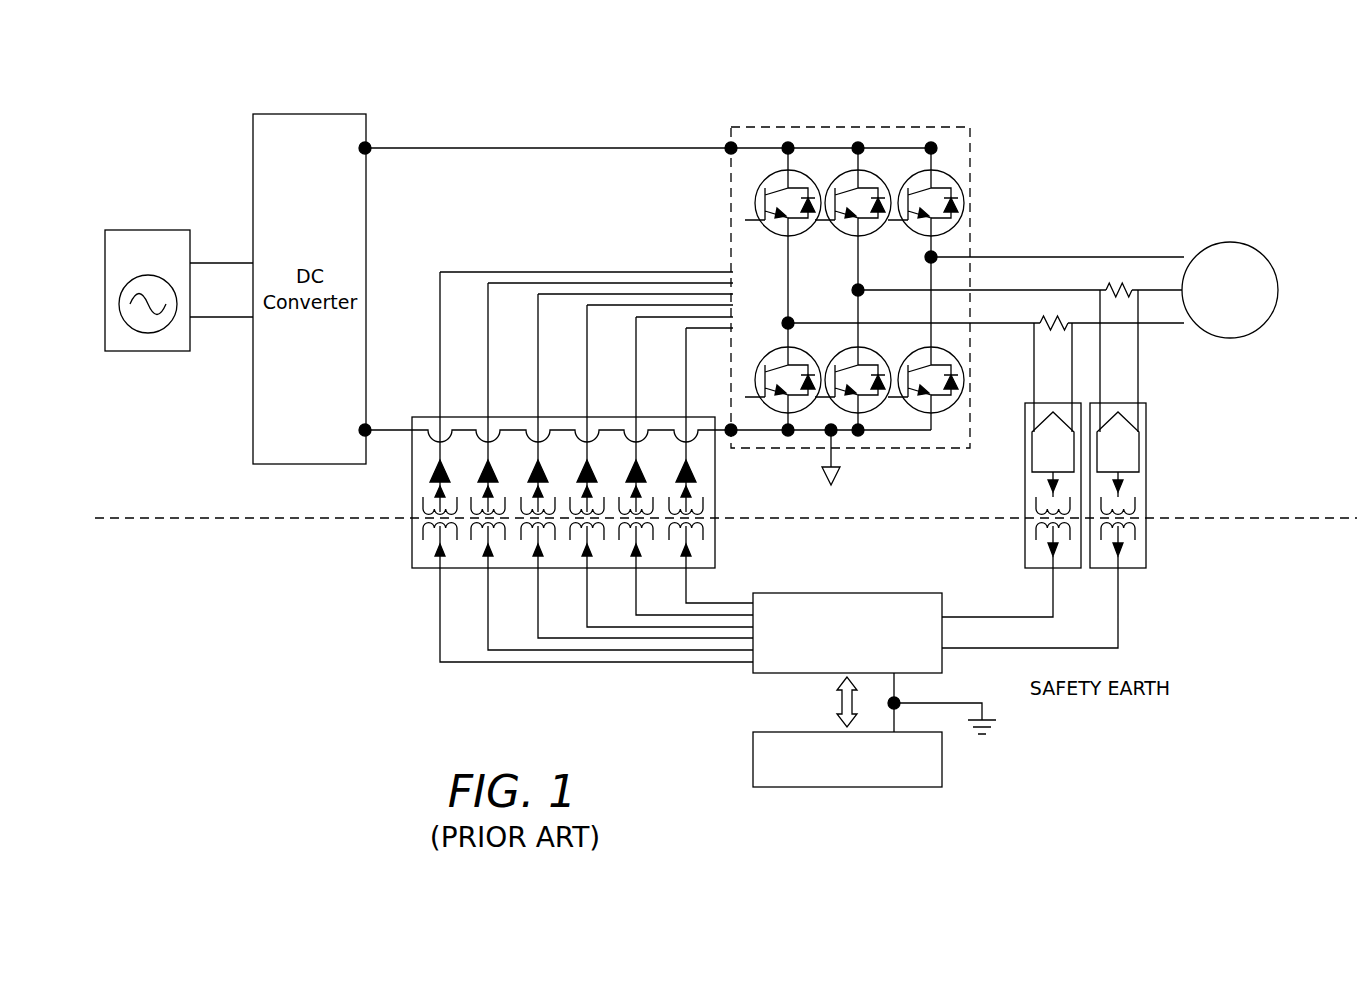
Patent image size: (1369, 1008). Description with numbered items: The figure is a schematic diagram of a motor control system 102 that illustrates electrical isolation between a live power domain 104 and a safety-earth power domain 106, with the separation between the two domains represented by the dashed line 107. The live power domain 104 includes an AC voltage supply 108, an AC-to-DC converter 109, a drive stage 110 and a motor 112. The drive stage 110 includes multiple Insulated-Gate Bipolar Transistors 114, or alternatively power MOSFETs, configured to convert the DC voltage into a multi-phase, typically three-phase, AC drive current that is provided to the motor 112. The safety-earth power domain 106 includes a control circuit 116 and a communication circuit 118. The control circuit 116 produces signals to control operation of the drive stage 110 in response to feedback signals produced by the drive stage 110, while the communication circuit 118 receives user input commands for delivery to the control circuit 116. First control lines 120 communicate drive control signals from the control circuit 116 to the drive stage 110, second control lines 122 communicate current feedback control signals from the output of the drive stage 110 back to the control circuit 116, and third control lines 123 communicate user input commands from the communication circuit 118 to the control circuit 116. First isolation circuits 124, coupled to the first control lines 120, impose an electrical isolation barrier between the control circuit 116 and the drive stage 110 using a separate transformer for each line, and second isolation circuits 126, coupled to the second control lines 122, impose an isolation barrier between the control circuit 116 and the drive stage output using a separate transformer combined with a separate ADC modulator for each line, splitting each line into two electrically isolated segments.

The motor control system 102 is at (1218, 48).
The live power domain 104 is at (1312, 185).
The safety-earth power domain 106 is at (1302, 635).
The dashed line 107 is at (1258, 518).
The AC voltage supply 108 is at (153, 229).
The AC-to-DC converter 109 is at (253, 428).
The drive stage 110 is at (972, 160).
The motor 112 is at (1265, 255).
The Insulated-Gate Bipolar Transistors (IGBTs) 114 is at (755, 192).
The control circuit 116 is at (894, 593).
The communication circuits 118 is at (753, 755).
The first control lines 120 is at (415, 645).
The second control lines 122 is at (1185, 367).
The third control lines 123 is at (838, 703).
The first isolation circuits 124 is at (412, 549).
The second isolation circuits 126 is at (1147, 548).